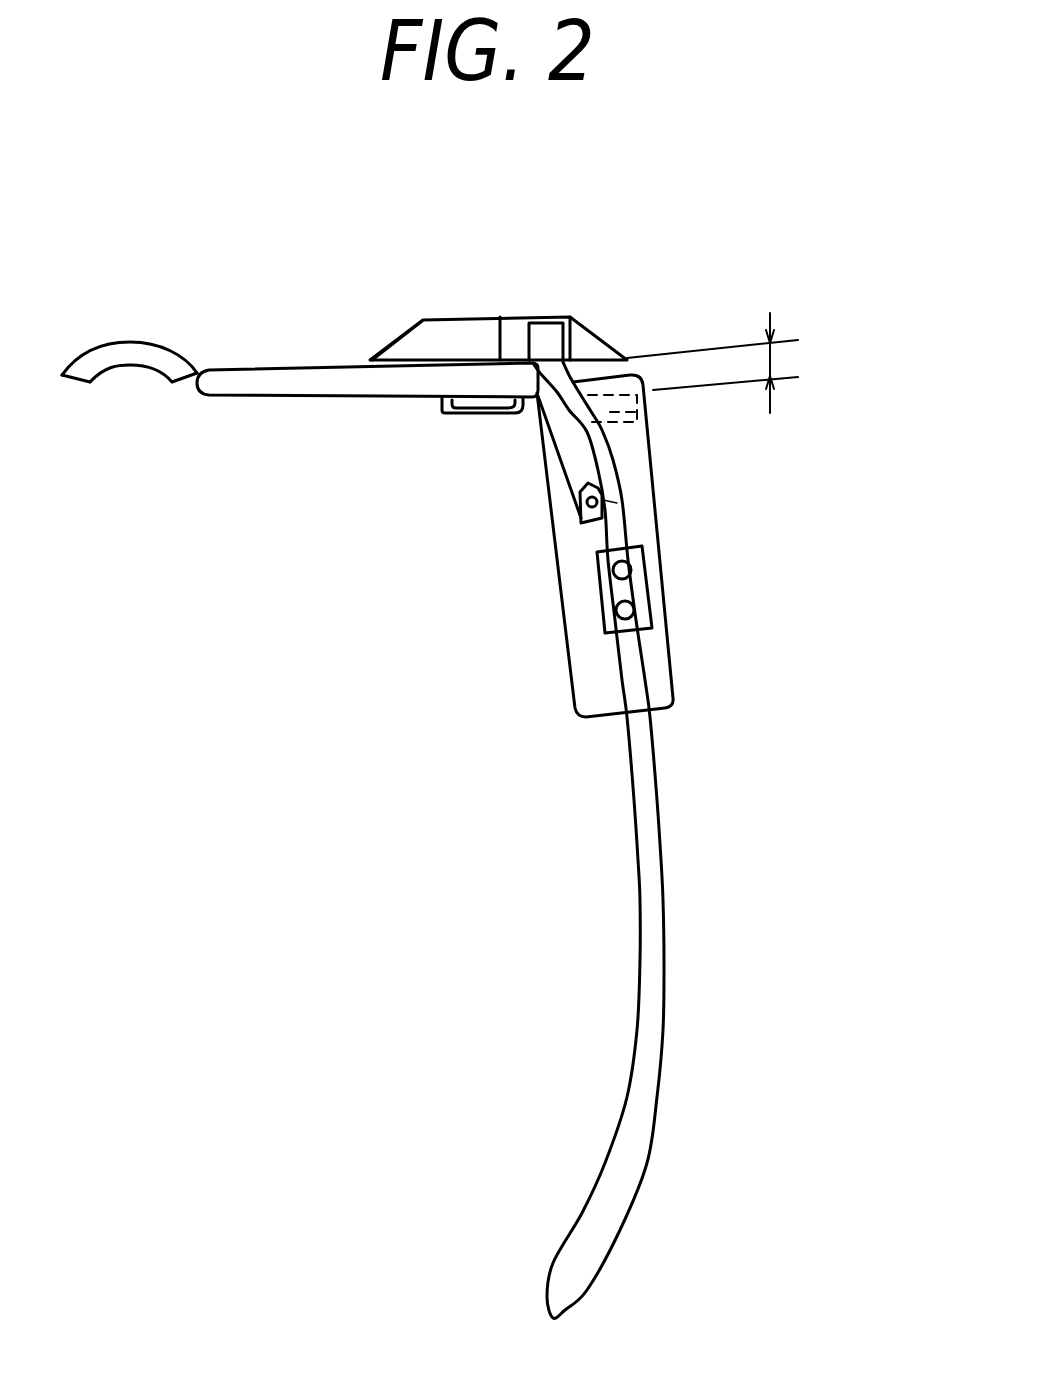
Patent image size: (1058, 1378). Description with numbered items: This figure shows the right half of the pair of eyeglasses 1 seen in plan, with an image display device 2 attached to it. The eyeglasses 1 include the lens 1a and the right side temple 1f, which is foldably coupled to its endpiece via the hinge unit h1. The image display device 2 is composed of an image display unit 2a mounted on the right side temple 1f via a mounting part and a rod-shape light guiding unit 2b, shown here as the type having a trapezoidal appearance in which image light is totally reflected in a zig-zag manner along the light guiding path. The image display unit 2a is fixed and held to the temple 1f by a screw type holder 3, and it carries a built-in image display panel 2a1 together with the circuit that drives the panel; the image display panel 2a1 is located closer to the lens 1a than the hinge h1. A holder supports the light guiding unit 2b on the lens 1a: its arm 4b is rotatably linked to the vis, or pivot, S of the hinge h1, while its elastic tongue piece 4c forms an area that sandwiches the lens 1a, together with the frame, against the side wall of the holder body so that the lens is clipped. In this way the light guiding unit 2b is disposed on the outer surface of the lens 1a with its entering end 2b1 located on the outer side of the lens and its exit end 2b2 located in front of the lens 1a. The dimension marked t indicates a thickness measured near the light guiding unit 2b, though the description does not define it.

The pair of eyeglasses 1 is at (242, 398).
The lens 1a is at (337, 383).
The temple 1f is at (650, 927).
The image display device 2 is at (599, 471).
The image display unit 2a is at (663, 688).
The image display panel 2a1 is at (650, 412).
The light guiding unit 2b is at (458, 338).
The entering end 2b1 is at (598, 366).
The exit end 2b2 is at (393, 363).
The screw type holder 3 is at (598, 613).
The arm 4b is at (565, 440).
The elastic tongue piece 4c is at (470, 417).
The vis (pivot) S is at (590, 527).
The hinge unit h1 is at (617, 503).
The thickness t is at (722, 363).